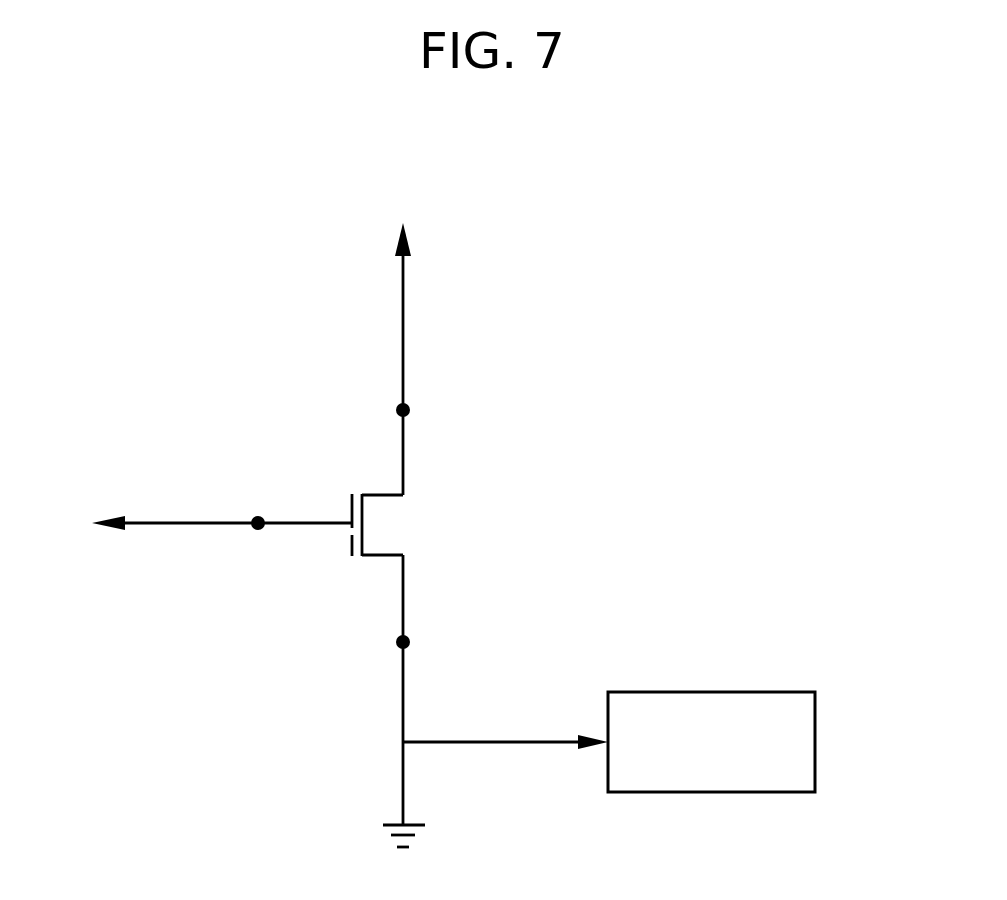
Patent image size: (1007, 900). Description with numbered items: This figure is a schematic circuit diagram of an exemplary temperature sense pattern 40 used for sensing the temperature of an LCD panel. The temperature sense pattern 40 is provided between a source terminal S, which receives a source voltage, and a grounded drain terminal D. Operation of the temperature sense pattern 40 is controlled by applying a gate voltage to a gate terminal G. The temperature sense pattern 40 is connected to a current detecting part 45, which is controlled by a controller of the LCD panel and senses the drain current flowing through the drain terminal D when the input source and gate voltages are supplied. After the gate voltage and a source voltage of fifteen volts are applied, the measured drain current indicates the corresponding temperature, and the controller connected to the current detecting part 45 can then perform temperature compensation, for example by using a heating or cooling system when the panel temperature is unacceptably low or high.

The temperature sense pattern 40 is at (411, 521).
The current detecting part 45 is at (798, 737).
The source terminal S is at (388, 411).
The gate terminal G is at (262, 549).
The drain terminal D is at (386, 643).